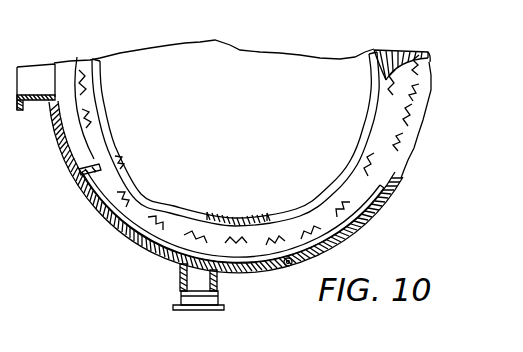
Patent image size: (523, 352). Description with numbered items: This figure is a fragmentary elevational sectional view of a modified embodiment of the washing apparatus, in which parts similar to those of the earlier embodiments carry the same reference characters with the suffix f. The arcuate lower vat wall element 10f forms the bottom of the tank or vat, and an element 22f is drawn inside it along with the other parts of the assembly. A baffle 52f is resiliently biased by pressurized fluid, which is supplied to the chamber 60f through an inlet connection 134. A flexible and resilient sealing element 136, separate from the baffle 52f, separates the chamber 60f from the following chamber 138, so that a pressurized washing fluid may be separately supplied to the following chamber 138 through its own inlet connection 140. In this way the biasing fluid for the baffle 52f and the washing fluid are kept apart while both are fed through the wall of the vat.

The arcuate lower vat wall element 10f is at (360, 231).
The inner liner 22f is at (107, 120).
The chamber 60f is at (123, 215).
The baffle 52f is at (240, 260).
The inlet connection 134 is at (208, 298).
The flexible and resilient sealing element 136 is at (98, 178).
The following chamber 138 is at (72, 132).
The inlet connection 140 is at (31, 93).